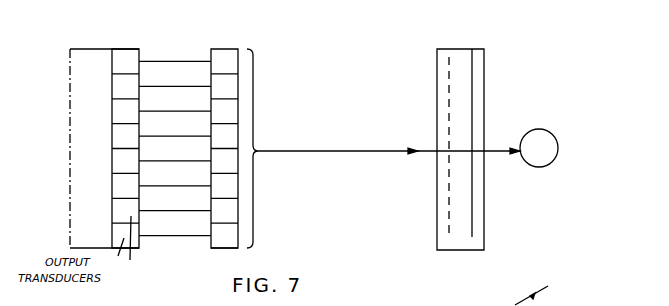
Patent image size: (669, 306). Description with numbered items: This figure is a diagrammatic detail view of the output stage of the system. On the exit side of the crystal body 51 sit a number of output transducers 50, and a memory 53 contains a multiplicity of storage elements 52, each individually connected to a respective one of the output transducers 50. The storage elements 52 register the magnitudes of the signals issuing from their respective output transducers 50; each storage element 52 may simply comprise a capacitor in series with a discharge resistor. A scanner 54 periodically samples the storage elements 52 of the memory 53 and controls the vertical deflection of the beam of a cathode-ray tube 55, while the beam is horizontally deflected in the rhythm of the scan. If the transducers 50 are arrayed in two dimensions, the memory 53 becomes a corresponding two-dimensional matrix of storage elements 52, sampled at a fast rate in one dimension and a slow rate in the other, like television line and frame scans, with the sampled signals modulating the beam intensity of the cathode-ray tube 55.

The output transducers 50 is at (122, 82).
The crystal body 51 is at (74, 47).
The storage elements 52 is at (227, 80).
The memory 53 is at (220, 249).
The scanner 54 is at (462, 53).
The cathode-ray tube 55 is at (553, 134).